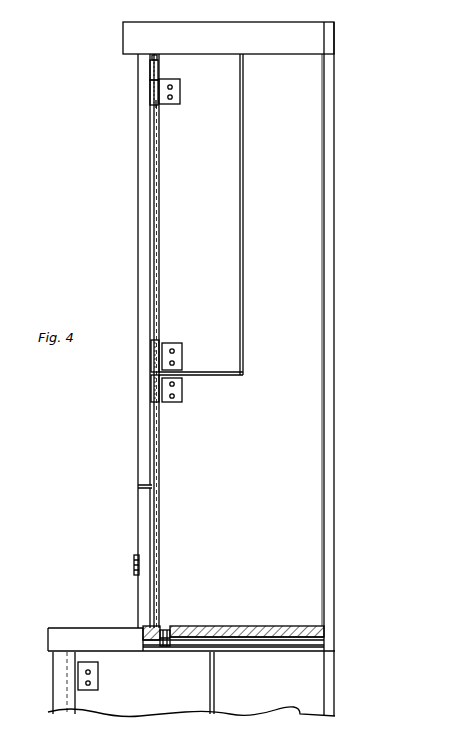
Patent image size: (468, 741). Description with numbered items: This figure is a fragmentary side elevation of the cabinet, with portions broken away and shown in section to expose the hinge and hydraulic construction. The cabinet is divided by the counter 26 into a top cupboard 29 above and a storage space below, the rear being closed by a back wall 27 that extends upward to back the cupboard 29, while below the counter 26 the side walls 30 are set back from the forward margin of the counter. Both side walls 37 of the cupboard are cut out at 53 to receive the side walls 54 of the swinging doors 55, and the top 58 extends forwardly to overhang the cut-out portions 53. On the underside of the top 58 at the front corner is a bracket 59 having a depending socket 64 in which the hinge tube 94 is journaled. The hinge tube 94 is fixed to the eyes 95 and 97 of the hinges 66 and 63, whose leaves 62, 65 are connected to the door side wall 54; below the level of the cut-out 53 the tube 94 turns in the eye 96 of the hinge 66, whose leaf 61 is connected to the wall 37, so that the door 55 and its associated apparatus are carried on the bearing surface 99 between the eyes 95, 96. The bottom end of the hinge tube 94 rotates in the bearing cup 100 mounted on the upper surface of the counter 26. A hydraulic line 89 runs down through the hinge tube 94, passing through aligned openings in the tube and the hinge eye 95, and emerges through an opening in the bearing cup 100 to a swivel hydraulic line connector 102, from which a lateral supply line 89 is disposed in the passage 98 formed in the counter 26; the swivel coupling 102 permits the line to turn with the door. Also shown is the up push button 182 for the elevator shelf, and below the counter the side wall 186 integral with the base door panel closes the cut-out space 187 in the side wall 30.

The counter 26 is at (83, 638).
The back wall 27 is at (335, 468).
The top cupboard 29 is at (121, 206).
The side wall 30 is at (300, 696).
The side wall of cabinet 37 is at (303, 456).
The cut-out 53 is at (221, 377).
The door side wall 54 is at (218, 243).
The swinging door 55 is at (138, 229).
The top 58 is at (130, 34).
The bracket 59 is at (161, 57).
The leaf 61 is at (174, 401).
The leaf 62 is at (178, 357).
The hinge 63 is at (150, 90).
The depending socket 64 is at (150, 70).
The leaf 65 is at (177, 93).
The hinge 66 is at (158, 388).
The hydraulic line 89 is at (184, 637).
The hinge tube 94 is at (158, 300).
The eye 95 is at (161, 346).
The eye 96 is at (153, 397).
The eye 97 is at (158, 104).
The passage 98 is at (243, 640).
The bearing surface 99 is at (160, 373).
The bearing cup 100 is at (158, 627).
The swivel hydraulic line connector 102 is at (163, 651).
The up push button 182 is at (134, 566).
The side wall 186 is at (200, 693).
The cut-out space 187 is at (205, 703).